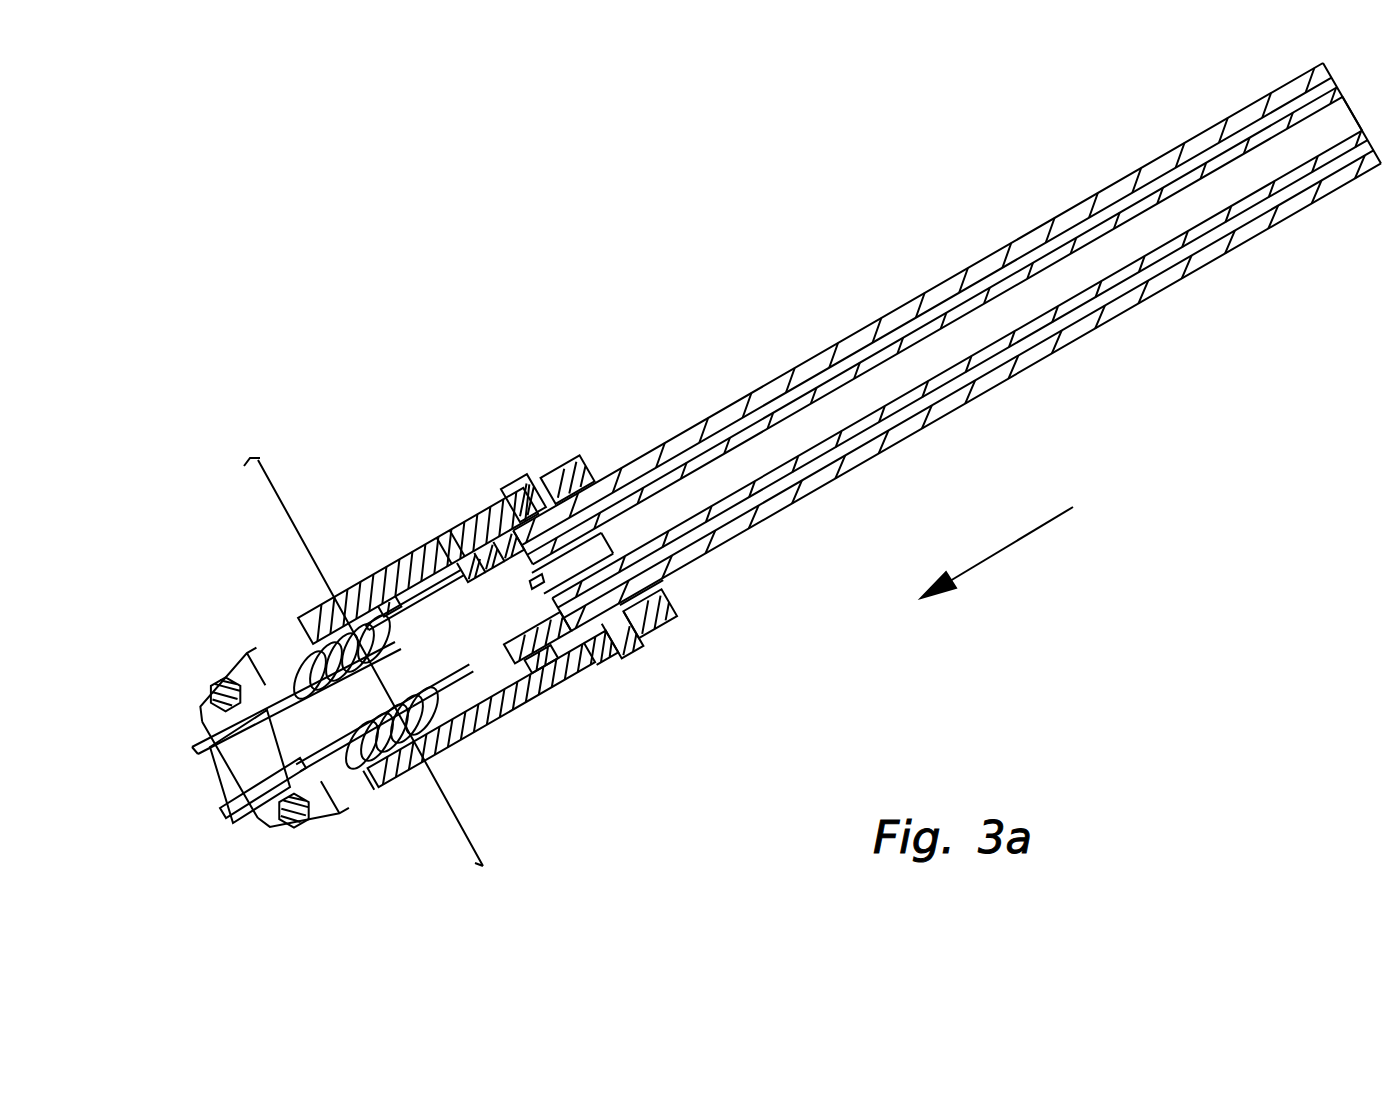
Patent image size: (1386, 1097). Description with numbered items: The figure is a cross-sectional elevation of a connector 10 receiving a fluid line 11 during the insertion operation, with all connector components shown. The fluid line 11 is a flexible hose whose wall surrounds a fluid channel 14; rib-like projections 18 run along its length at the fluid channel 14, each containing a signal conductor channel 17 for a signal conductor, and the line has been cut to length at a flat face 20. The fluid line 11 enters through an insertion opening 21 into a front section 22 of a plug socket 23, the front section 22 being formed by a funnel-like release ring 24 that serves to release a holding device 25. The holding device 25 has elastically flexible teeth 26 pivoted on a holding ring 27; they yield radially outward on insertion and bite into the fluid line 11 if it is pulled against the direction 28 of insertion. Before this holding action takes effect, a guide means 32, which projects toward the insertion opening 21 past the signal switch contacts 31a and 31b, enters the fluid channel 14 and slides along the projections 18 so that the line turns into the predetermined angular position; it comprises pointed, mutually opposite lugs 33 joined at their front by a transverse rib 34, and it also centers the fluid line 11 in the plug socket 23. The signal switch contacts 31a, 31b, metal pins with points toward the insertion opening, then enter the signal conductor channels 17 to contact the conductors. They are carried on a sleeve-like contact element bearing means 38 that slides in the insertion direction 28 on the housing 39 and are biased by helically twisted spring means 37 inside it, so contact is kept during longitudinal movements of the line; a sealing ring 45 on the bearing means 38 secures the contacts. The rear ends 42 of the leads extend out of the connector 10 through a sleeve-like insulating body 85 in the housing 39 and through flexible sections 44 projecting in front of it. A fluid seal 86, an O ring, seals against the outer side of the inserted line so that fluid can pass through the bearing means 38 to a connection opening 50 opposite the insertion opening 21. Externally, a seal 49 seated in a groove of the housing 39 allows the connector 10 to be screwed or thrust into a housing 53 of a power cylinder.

The connector 10 is at (543, 737).
The fluid line 11 is at (1062, 185).
The fluid channel 14 is at (919, 392).
The signal conductor channel 17 is at (990, 365).
The rib-like projections 18 is at (782, 474).
The planar face 20 is at (483, 553).
The insertion opening 21 is at (672, 592).
The front section 22 is at (652, 583).
The plug socket 23 is at (596, 462).
The release ring 24 is at (663, 623).
The holding device 25 is at (600, 660).
The teeth 26 is at (563, 687).
The holding ring 27 is at (519, 483).
The insertion direction 28 is at (1020, 538).
The signal switch contact 31a is at (390, 577).
The signal switch contact 31b is at (472, 673).
The guide means 32 is at (578, 577).
The lugs 33 is at (507, 533).
The transverse rib 34 is at (533, 587).
The spring means 37 is at (383, 773).
The contact element bearing means 38 is at (377, 627).
The housing 39 is at (450, 743).
The ends 42 is at (210, 763).
The sections 44 is at (240, 820).
The sealing ring 45 is at (387, 597).
The seal 49 is at (292, 822).
The connection opening 50 is at (237, 767).
The housing of the power cylinder 53 is at (271, 480).
The sleeve-like body 85 is at (270, 664).
The fluid seal 86 is at (447, 540).